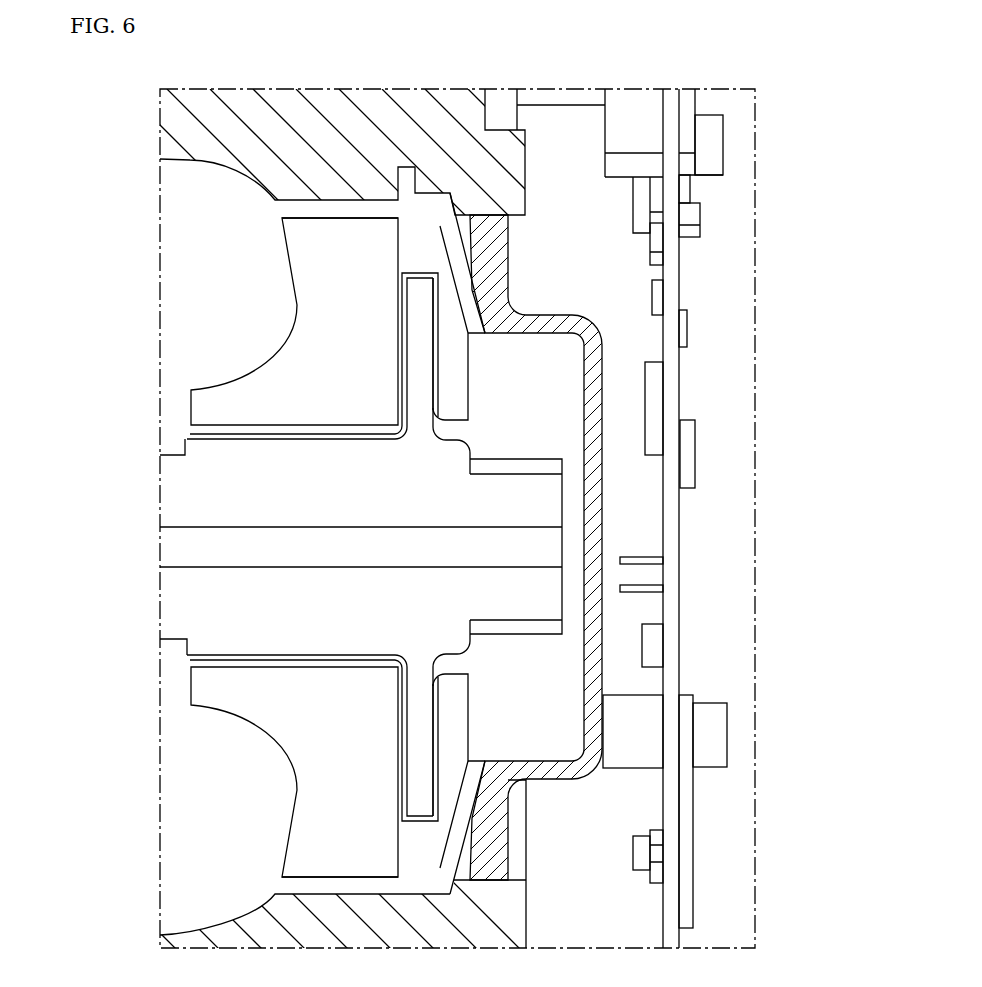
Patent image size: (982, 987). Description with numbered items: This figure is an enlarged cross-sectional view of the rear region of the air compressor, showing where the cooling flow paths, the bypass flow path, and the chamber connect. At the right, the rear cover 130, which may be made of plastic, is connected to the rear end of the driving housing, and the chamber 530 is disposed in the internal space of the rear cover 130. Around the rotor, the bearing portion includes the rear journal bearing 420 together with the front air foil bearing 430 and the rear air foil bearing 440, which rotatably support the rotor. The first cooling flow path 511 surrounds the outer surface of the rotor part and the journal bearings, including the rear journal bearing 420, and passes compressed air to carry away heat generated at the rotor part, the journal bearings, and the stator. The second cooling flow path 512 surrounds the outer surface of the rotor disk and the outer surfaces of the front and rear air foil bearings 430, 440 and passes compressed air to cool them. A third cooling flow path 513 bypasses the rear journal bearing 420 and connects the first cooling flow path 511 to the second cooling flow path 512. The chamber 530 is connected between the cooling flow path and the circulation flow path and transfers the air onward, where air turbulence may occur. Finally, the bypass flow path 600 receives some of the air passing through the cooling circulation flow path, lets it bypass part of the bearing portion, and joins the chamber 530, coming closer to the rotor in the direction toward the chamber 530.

The rear cover 130 is at (603, 462).
The rear journal bearing 420 is at (278, 436).
The front air foil bearing 430 is at (403, 323).
The rear air foil bearing 440 is at (437, 363).
The first cooling flow path 511 is at (271, 419).
The second cooling flow path 512 is at (456, 199).
The third cooling flow path 513 is at (340, 218).
The chamber 530 is at (603, 408).
The bypass flow path 600 is at (457, 262).